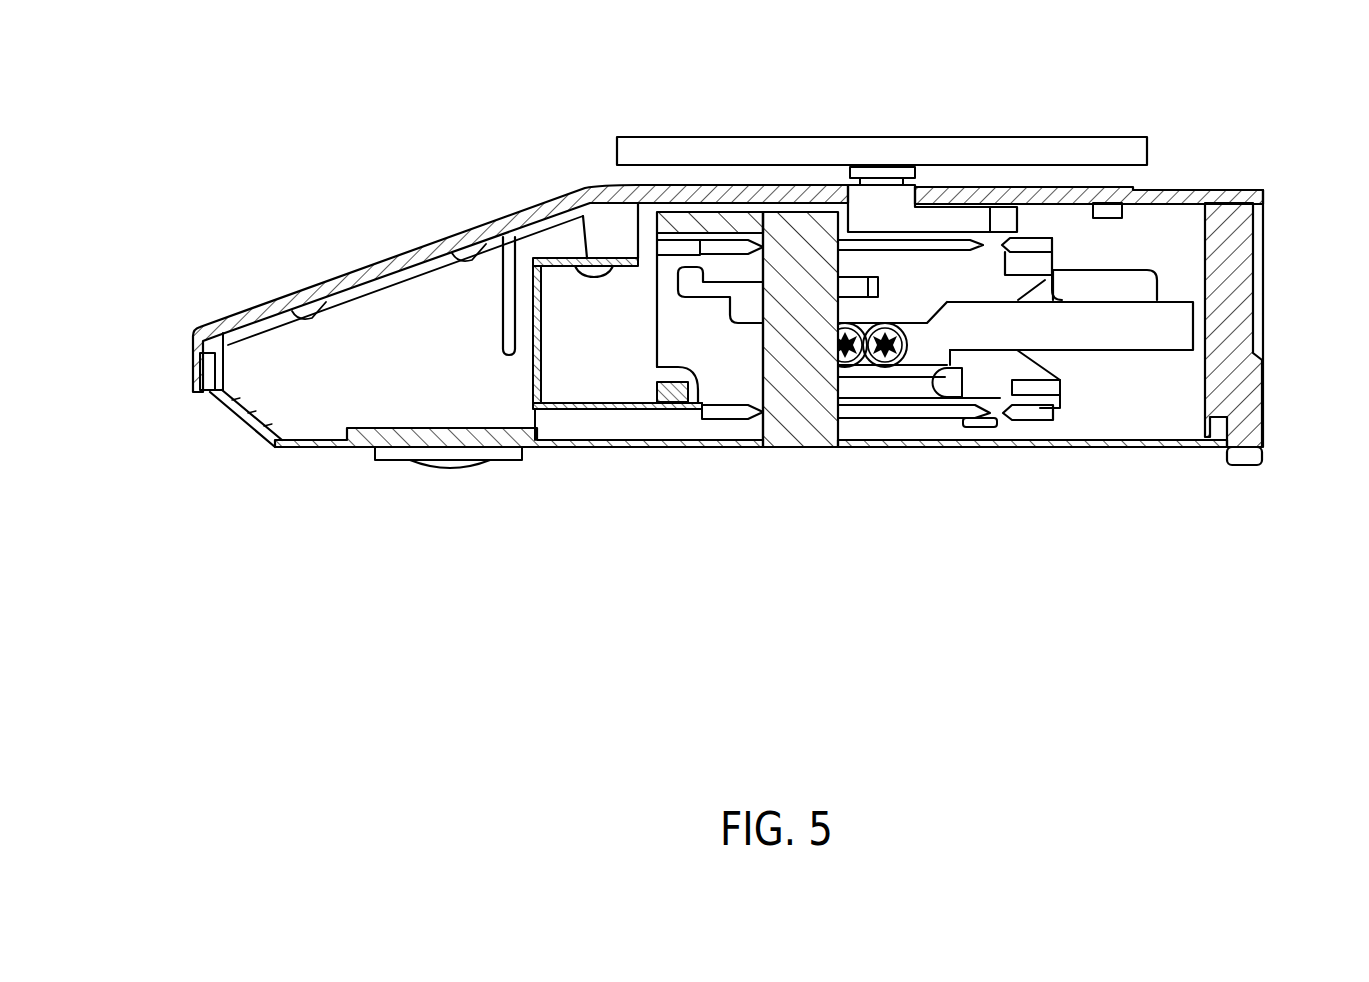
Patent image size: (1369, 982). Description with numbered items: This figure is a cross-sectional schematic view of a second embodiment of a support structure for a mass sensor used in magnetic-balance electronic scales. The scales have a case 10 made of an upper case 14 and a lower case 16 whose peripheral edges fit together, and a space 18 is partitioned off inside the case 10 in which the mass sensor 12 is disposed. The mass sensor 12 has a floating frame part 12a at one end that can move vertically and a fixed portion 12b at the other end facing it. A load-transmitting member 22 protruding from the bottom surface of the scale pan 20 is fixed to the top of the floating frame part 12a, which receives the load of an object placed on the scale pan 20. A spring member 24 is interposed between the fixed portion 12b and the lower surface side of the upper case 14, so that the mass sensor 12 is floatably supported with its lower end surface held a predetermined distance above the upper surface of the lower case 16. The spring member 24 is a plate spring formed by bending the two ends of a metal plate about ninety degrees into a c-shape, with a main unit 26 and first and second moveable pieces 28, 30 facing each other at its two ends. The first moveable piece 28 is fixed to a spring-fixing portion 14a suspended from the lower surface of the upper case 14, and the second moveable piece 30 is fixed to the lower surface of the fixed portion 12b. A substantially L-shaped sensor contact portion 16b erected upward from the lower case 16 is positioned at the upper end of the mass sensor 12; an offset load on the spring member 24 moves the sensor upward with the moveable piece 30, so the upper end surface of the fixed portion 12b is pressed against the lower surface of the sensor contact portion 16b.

The case 10 is at (306, 264).
The mass sensor 12 is at (1150, 234).
The floating frame part 12a is at (993, 243).
The fixed portion 12b is at (670, 333).
The upper case 14 is at (500, 205).
The spring-fixing portion 14a is at (587, 222).
The lower case 16 is at (558, 448).
The sensor contact portion 16b is at (790, 237).
The space 18 is at (1184, 252).
The scale pan 20 is at (690, 148).
The load-transmitting member 22 is at (878, 205).
The spring member 24 is at (509, 382).
The main unit 26 is at (532, 307).
The first moveable piece 28 is at (568, 258).
The second moveable piece 30 is at (627, 410).